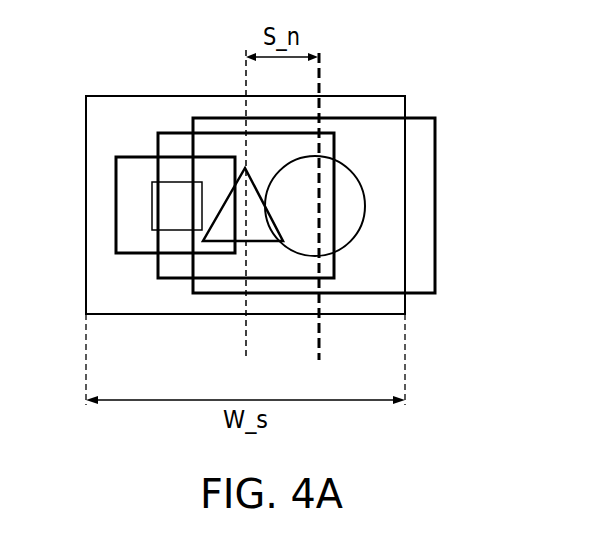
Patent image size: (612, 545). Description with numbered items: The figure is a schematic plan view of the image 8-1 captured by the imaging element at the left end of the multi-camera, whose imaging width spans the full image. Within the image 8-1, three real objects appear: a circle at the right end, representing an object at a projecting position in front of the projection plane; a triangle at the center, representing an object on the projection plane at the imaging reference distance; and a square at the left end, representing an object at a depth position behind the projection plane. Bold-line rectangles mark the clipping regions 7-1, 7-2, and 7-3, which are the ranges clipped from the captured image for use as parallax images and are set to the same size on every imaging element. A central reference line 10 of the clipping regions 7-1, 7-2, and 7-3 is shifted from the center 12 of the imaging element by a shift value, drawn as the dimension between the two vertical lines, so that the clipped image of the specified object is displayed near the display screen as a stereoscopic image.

The image 8-1 is at (387, 94).
The clipping region 7-1 is at (436, 139).
The clipping region 7-2 is at (173, 278).
The clipping region 7-3 is at (118, 202).
The center 12 is at (243, 65).
The central reference line 10 is at (322, 78).